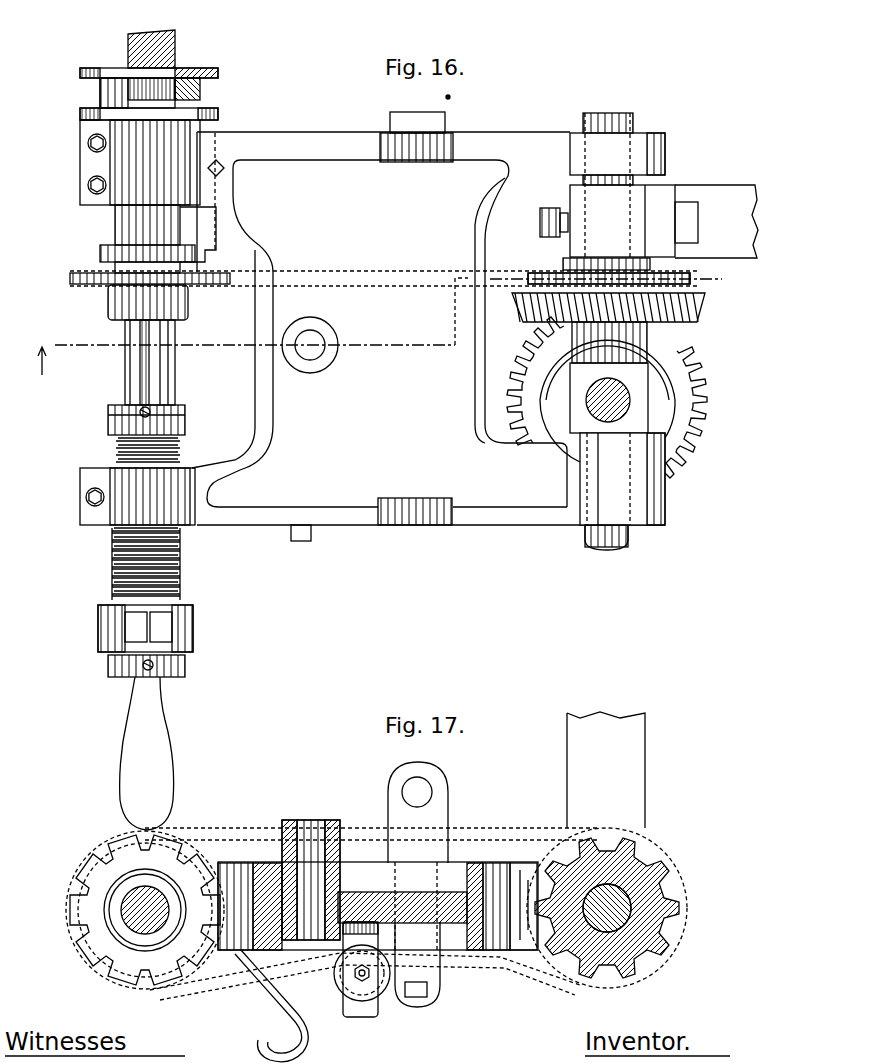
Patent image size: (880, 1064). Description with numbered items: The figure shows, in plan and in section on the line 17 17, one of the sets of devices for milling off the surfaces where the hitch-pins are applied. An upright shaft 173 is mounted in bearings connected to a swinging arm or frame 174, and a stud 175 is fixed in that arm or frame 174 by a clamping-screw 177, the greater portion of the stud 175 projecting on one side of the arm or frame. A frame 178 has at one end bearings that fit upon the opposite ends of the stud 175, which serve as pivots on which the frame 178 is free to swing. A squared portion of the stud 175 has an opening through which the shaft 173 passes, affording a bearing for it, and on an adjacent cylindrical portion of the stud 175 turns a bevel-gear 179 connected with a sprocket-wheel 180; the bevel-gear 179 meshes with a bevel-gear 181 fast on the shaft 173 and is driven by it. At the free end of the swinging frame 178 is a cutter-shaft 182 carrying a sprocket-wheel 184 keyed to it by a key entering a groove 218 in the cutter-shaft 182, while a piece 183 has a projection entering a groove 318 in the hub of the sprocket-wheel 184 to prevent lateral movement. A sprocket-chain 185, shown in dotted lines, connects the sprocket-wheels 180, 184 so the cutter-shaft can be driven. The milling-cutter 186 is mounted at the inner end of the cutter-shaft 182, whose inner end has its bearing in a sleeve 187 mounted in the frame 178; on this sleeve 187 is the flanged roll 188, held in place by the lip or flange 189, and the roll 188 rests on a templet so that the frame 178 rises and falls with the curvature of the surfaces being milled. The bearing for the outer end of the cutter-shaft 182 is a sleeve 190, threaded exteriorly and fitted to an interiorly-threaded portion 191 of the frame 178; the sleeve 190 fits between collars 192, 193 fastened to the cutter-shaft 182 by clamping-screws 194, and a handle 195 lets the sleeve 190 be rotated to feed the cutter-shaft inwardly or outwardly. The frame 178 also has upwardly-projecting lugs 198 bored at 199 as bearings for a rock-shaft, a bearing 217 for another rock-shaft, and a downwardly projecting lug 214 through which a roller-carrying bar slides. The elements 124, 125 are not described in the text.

In FIG. 16, the section line 17 17 is at (393, 322).
In FIG. 16, the bracket arm 124 is at (660, 227).
In FIG. 16, the shaft 125 is at (615, 105).
In FIG. 16, the upright shaft 173 is at (625, 395).
In FIG. 17, the arm or frame 174 is at (606, 770).
In FIG. 17, the stud 175 is at (632, 915).
In FIG. 16, the clamping-screw 177 is at (545, 210).
In FIG. 16, the frame 178 is at (428, 336).
In FIG. 17, the frame 178 is at (455, 940).
In FIG. 16, the bevel-gear 179 is at (690, 305).
In FIG. 16, the sprocket-wheel 180 is at (690, 272).
In FIG. 17, the sprocket-wheel 180 is at (663, 893).
In FIG. 16, the bevel-gear 181 is at (700, 405).
In FIG. 16, the cutter-shaft 182 is at (165, 372).
In FIG. 17, the cutter-shaft 182 is at (138, 918).
In FIG. 16, the piece 183 is at (207, 220).
In FIG. 16, the sprocket-wheel 184 is at (72, 280).
In FIG. 17, the sprocket-wheel 184 is at (98, 880).
In FIG. 16, the sprocket-chain 185 is at (245, 268).
In FIG. 17, the sprocket-chain 185 is at (505, 973).
In FIG. 16, the milling-cutter 186 is at (175, 42).
In FIG. 16, the sleeve 187 is at (118, 222).
In FIG. 16, the flanged roll 188 is at (200, 95).
In FIG. 16, the lip or flange 189 is at (218, 76).
In FIG. 16, the sleeve 190 is at (182, 575).
In FIG. 16, the interiorly-threaded portion 191 is at (118, 510).
In FIG. 16, the collar 192 is at (185, 412).
In FIG. 16, the collar 193 is at (190, 665).
In FIG. 16, the clamping-screws 194 is at (135, 677).
In FIG. 16, the handle 195 is at (147, 753).
In FIG. 16, the upwardly-projecting lugs 198 is at (425, 490).
In FIG. 17, the upwardly-projecting lugs 198 is at (447, 800).
In FIG. 17, the bore 199 is at (422, 790).
In FIG. 17, the lug 214 is at (408, 1005).
In FIG. 16, the bearing 217 is at (310, 356).
In FIG. 17, the bearing 217 is at (310, 822).
In FIG. 16, the groove 218 is at (145, 375).
In FIG. 16, the groove 318 is at (110, 262).